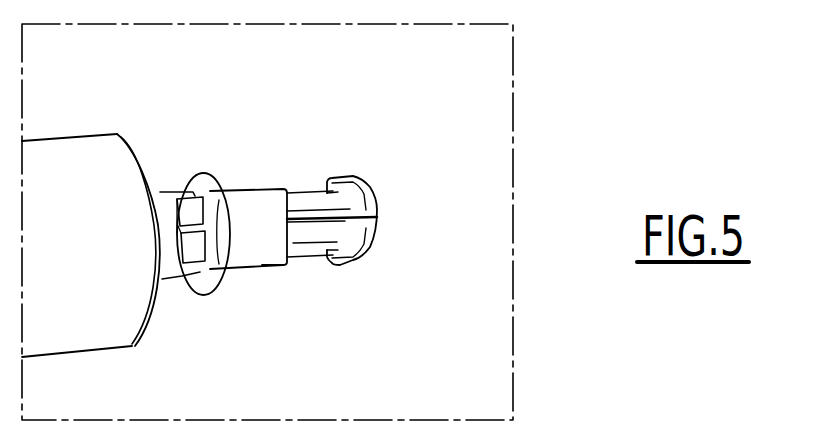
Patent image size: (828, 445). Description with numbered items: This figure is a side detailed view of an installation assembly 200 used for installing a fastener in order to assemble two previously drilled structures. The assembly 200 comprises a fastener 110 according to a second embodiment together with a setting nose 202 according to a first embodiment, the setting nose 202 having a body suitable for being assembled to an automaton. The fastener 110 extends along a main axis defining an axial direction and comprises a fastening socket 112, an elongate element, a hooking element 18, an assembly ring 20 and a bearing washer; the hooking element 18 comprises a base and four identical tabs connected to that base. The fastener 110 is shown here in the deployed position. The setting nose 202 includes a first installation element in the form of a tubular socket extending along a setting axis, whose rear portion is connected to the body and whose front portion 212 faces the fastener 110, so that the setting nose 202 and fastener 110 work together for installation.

The assembly 200 is at (267, 222).
The setting nose 202 is at (143, 145).
The front portion 212 is at (180, 290).
The fastener 110 is at (255, 178).
The fastening socket 112 is at (262, 266).
The hooking element 18 is at (315, 263).
The assembly ring 20 is at (378, 210).